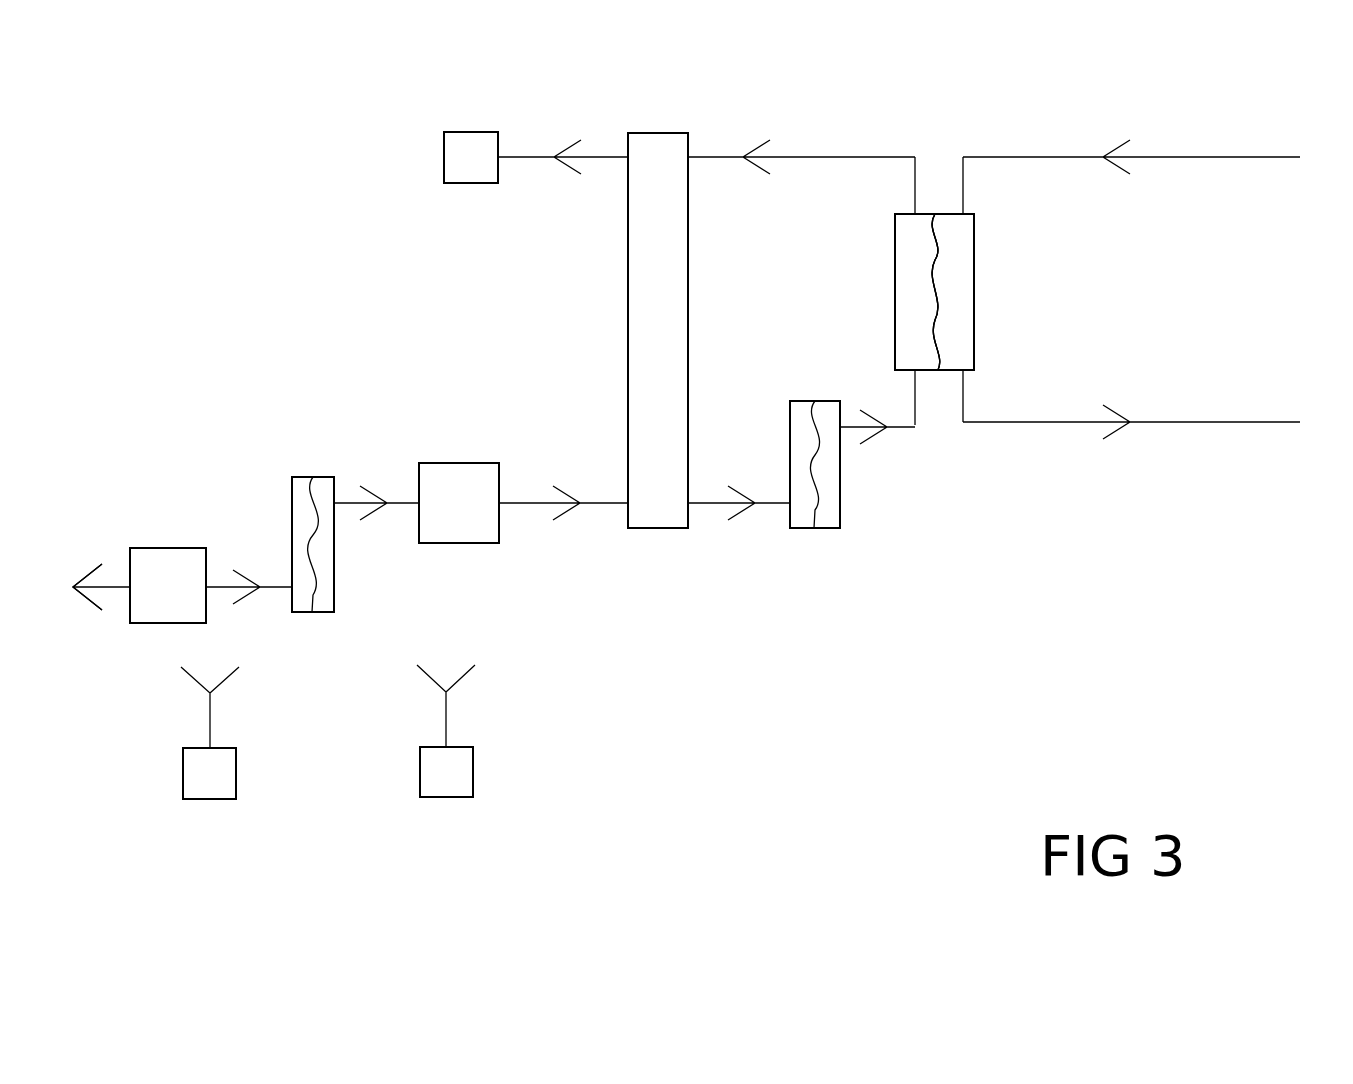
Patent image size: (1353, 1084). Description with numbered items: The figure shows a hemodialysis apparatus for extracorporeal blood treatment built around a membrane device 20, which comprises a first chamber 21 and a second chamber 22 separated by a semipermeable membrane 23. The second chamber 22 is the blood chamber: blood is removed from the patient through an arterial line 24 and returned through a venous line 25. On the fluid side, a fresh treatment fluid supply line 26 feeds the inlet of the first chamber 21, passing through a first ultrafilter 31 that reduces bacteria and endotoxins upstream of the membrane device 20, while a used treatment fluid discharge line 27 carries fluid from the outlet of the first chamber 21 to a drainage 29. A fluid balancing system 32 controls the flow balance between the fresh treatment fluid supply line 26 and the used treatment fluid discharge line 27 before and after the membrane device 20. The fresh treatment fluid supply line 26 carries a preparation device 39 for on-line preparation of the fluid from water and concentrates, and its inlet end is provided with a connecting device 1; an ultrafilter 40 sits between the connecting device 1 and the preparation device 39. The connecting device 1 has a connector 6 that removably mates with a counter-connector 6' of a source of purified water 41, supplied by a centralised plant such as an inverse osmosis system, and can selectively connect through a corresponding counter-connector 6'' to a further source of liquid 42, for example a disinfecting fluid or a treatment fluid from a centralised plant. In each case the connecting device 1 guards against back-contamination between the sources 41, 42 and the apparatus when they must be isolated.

The connecting device 1 is at (182, 585).
The connector 6 is at (89, 543).
The counter-connector 6' is at (246, 707).
The counter-connector 6'' is at (487, 698).
The membrane device 20 is at (974, 350).
The first chamber 21 is at (912, 252).
The second chamber 22 is at (960, 290).
The semipermeable membrane 23 is at (940, 335).
The arterial line 24 is at (1200, 157).
The venous line 25 is at (1210, 422).
The fresh treatment fluid supply line 26 is at (718, 505).
The used treatment fluid discharge line 27 is at (793, 157).
The drainage 29 is at (444, 160).
The first ultrafilter 31 is at (840, 498).
The fluid balancing system 32 is at (628, 265).
The preparation device 39 is at (523, 503).
The ultrafilter 40 is at (334, 592).
The source of purified water 41 is at (236, 773).
The further source of liquid 42 is at (473, 770).